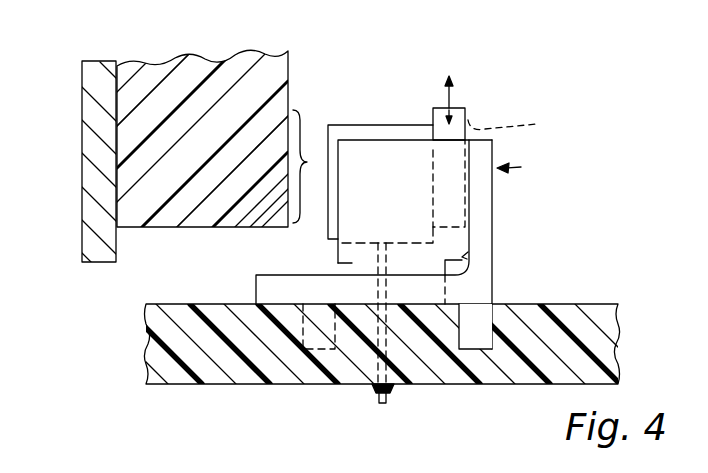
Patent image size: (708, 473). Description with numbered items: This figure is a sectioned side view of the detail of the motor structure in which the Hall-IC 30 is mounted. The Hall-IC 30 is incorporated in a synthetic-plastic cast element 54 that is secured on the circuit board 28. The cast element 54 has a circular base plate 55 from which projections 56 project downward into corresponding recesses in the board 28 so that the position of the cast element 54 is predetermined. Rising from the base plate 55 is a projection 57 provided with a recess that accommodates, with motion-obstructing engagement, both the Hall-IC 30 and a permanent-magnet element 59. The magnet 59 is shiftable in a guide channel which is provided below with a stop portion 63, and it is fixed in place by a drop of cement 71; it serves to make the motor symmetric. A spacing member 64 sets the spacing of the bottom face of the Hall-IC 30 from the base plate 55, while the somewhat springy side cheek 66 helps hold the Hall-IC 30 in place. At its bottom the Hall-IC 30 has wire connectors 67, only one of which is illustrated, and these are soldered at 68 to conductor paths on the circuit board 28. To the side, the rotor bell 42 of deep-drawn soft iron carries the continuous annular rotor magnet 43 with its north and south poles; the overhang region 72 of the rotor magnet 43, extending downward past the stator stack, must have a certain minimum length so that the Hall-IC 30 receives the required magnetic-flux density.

The circuit board 28 is at (218, 386).
The Hall-IC 30 is at (370, 131).
The rotor bell 42 is at (90, 150).
The rotor magnet 43 is at (193, 78).
The cast element 54 is at (524, 167).
The base plate 55 is at (276, 275).
The projections 56 is at (330, 386).
The projection 57 is at (484, 198).
The permanent-magnet element 59 is at (470, 108).
The stop portion 63 is at (468, 252).
The spacing member 64 is at (348, 262).
The side cheek 66 is at (385, 155).
The wire connectors 67 is at (405, 372).
The solder joint 68 is at (384, 403).
The drop of cement 71 is at (519, 120).
The overhang region 72 is at (301, 226).